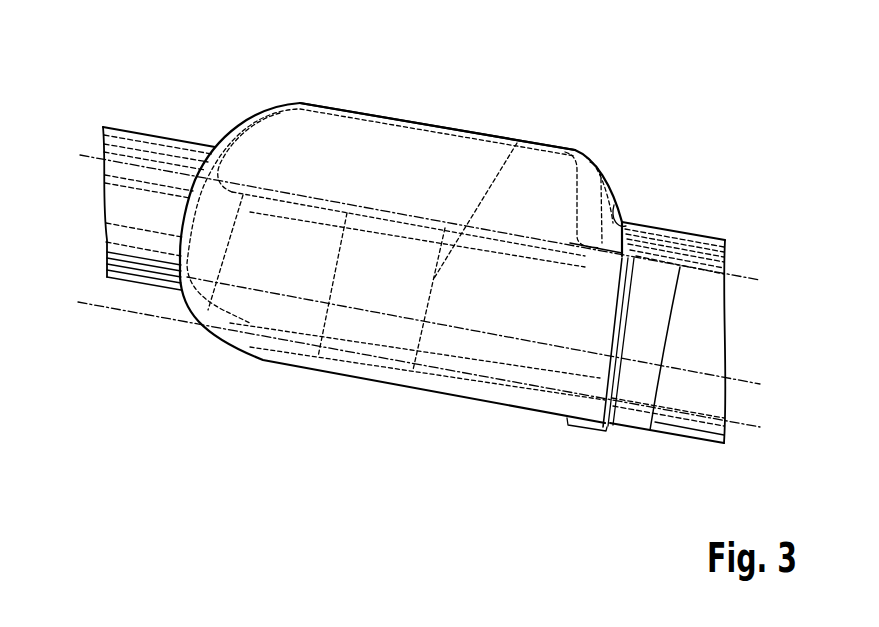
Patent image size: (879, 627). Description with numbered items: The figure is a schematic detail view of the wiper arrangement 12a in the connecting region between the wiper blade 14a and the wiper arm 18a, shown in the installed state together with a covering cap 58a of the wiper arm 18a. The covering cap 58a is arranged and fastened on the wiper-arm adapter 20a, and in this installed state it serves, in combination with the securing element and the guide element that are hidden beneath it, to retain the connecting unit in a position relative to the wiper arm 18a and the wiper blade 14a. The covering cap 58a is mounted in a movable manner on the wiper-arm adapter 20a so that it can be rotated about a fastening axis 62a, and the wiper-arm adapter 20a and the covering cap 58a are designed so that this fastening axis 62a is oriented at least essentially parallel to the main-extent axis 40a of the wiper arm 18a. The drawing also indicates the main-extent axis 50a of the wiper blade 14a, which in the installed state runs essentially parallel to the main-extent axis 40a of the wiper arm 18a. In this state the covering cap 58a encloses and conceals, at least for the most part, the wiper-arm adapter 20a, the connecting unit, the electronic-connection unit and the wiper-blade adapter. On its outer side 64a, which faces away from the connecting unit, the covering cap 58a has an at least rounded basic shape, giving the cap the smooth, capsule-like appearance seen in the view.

The wiper arrangement 12a is at (126, 72).
The wiper blade 14a is at (100, 199).
The wiper arm 18a is at (728, 331).
The wiper-arm adapter 20a is at (373, 396).
The main-extent axis of the wiper arm 40a is at (693, 372).
The main-extent axis of the wiper blade 50a is at (735, 277).
The covering cap 58a is at (443, 158).
The fastening axis 62a is at (690, 417).
The outer side 64a is at (381, 154).